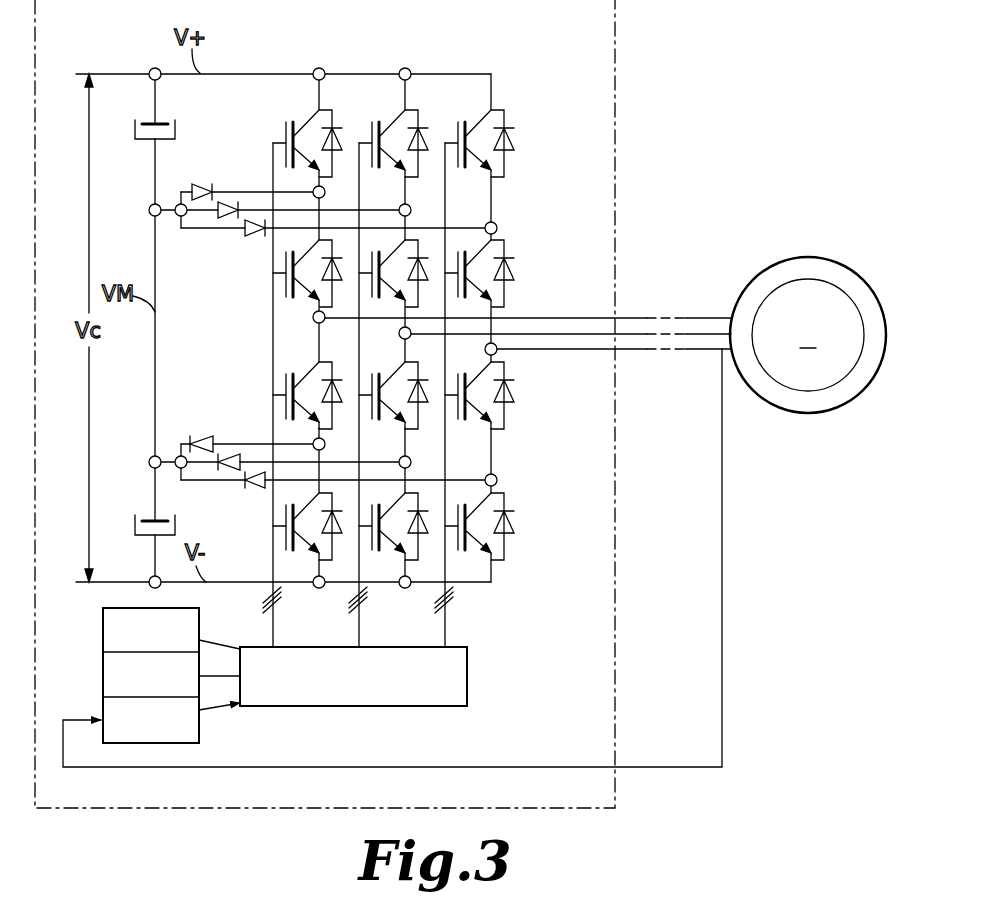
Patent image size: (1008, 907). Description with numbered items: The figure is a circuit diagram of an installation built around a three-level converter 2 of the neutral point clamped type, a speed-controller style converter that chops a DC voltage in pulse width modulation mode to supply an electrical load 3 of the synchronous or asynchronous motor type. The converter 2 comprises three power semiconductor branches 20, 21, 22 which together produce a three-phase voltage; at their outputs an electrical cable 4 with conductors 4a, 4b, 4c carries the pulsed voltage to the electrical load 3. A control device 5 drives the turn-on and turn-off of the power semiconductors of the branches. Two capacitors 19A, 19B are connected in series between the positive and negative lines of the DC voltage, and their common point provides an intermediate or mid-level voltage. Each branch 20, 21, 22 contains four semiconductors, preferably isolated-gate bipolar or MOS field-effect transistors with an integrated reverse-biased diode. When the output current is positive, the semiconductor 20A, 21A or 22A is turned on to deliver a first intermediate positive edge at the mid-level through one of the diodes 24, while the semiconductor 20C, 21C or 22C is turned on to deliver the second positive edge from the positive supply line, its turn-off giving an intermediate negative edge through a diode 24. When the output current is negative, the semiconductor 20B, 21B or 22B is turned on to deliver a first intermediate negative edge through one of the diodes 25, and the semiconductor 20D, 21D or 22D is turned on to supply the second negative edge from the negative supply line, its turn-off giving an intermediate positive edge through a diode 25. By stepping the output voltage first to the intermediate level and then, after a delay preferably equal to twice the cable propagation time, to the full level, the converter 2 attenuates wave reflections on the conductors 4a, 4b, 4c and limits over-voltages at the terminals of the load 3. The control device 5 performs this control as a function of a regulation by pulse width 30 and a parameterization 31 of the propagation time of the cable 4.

The three-level converter 2 is at (618, 110).
The electrical load 3 is at (830, 256).
The electrical cable 4 is at (535, 314).
The conductor 4a is at (680, 350).
The conductor 4b is at (688, 336).
The conductor 4c is at (690, 318).
The control device 5 is at (467, 677).
The capacitor 19A is at (140, 140).
The capacitor 19B is at (136, 521).
The branch 20 is at (509, 324).
The semiconductor 20A is at (508, 258).
The semiconductor 20B is at (512, 412).
The semiconductor 20C is at (515, 118).
The semiconductor 20D is at (512, 546).
The branch 21 is at (395, 324).
The semiconductor 21A is at (393, 301).
The semiconductor 21B is at (397, 418).
The semiconductor 21C is at (370, 137).
The semiconductor 21D is at (381, 565).
The branch 22 is at (283, 324).
The semiconductor 22A is at (276, 280).
The semiconductor 22B is at (274, 390).
The semiconductor 22C is at (307, 116).
The semiconductor 22D is at (302, 556).
The diodes 24 is at (222, 232).
The diodes 25 is at (222, 432).
The regulation by pulse width 30 is at (103, 706).
The parameterization of a propagation time 31 is at (103, 628).